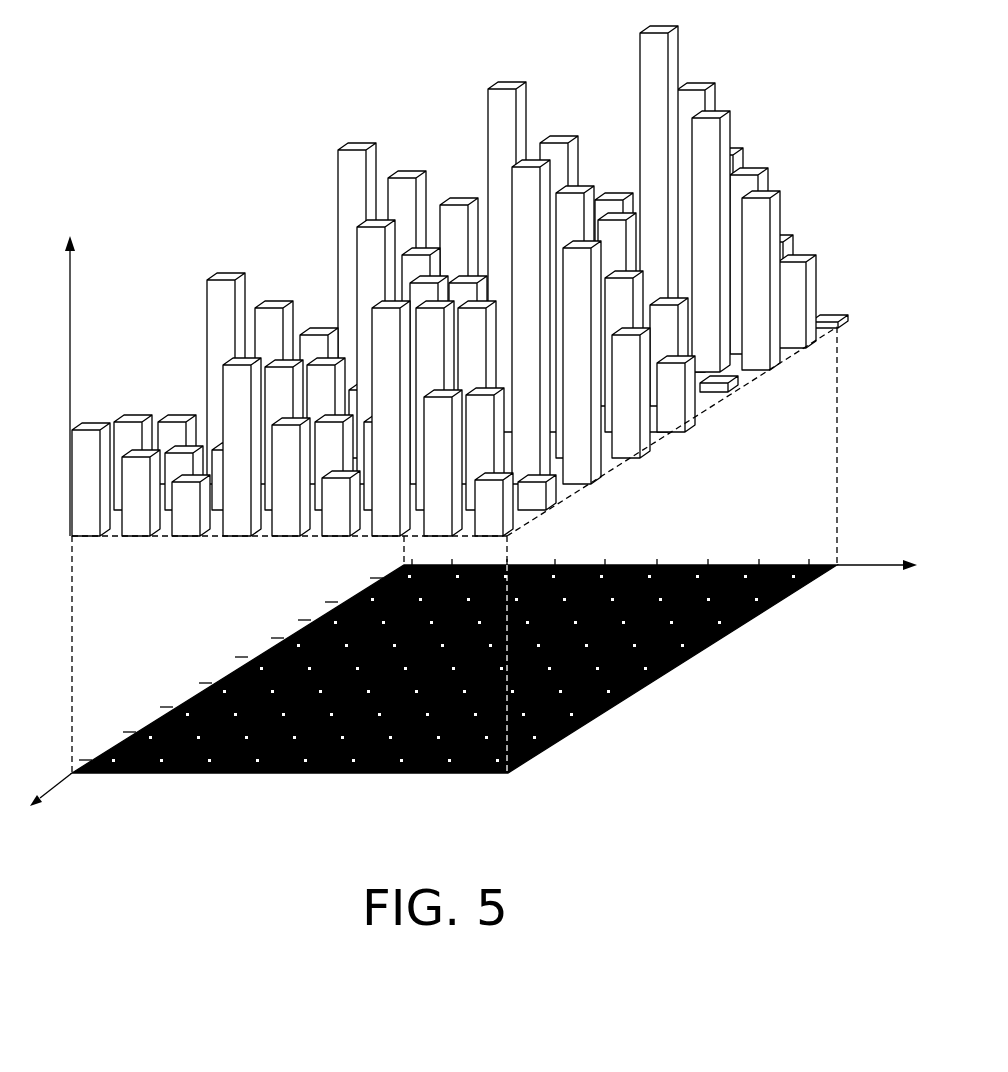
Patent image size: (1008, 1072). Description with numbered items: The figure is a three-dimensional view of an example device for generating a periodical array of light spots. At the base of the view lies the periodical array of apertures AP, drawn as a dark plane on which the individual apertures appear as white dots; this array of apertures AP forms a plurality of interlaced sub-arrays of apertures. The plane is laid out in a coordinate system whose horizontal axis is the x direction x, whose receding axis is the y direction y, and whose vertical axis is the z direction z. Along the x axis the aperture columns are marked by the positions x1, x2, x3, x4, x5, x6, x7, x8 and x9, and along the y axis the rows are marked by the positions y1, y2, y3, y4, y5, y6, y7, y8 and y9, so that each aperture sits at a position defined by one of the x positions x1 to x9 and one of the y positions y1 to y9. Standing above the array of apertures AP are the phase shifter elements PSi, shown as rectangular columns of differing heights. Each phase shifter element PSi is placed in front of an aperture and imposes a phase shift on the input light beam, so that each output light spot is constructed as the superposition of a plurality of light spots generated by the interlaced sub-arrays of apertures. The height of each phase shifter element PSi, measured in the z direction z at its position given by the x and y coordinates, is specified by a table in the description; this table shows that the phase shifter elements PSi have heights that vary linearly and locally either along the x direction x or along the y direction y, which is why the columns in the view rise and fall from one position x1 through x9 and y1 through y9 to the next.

The phase shifter element PSi is at (224, 278).
The periodical array of apertures AP is at (660, 680).
The x direction x is at (880, 583).
The y direction y is at (39, 807).
The z direction z is at (68, 369).
The x position x1 is at (421, 549).
The x position x2 is at (460, 549).
The x position x3 is at (515, 549).
The x position x4 is at (563, 549).
The x position x5 is at (608, 549).
The x position x6 is at (663, 549).
The x position x7 is at (715, 549).
The x position x8 is at (765, 549).
The x position x9 is at (816, 549).
The y position y1 is at (360, 570).
The y position y2 is at (321, 594).
The y position y3 is at (294, 612).
The y position y4 is at (266, 630).
The y position y5 is at (230, 649).
The y position y6 is at (192, 675).
The y position y7 is at (154, 699).
The y position y8 is at (114, 724).
The y position y9 is at (67, 751).